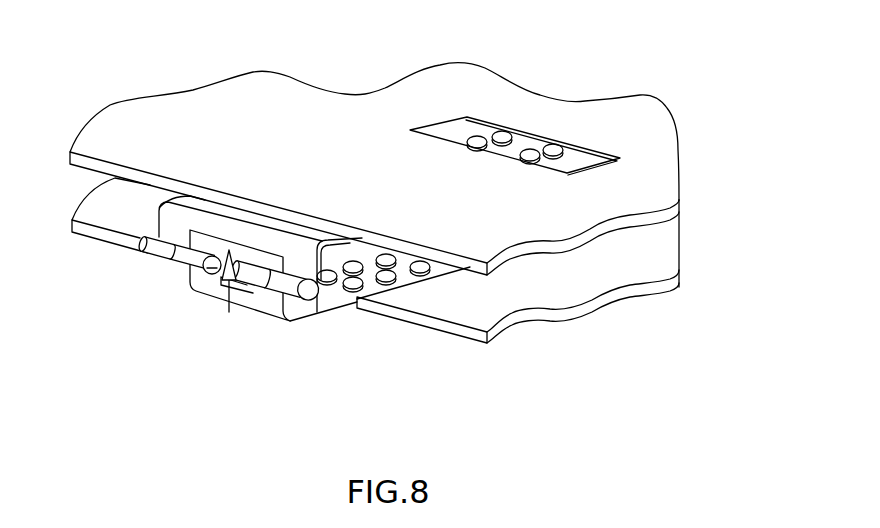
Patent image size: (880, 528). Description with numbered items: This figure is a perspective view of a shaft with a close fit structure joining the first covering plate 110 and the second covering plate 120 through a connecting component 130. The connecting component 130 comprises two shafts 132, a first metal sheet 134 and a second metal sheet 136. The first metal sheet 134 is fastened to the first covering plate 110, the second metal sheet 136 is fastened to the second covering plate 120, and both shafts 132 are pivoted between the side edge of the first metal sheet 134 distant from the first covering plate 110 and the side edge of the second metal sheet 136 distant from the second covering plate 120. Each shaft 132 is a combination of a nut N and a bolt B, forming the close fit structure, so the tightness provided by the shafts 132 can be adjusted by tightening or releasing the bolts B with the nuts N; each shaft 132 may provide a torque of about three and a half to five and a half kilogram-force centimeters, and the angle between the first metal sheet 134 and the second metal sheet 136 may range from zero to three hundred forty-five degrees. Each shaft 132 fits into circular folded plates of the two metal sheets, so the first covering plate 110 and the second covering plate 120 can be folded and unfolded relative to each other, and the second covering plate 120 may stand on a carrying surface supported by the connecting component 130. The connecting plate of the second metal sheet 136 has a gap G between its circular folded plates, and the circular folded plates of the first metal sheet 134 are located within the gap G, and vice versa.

The first covering plate 110 is at (647, 248).
The second covering plate 120 is at (480, 78).
The connecting component 130 is at (202, 316).
The shaft 132 is at (97, 335).
The first metal sheet 134 is at (217, 296).
The second metal sheet 136 is at (173, 212).
The nut N is at (140, 243).
The bolt B is at (203, 266).
The gap G is at (230, 312).